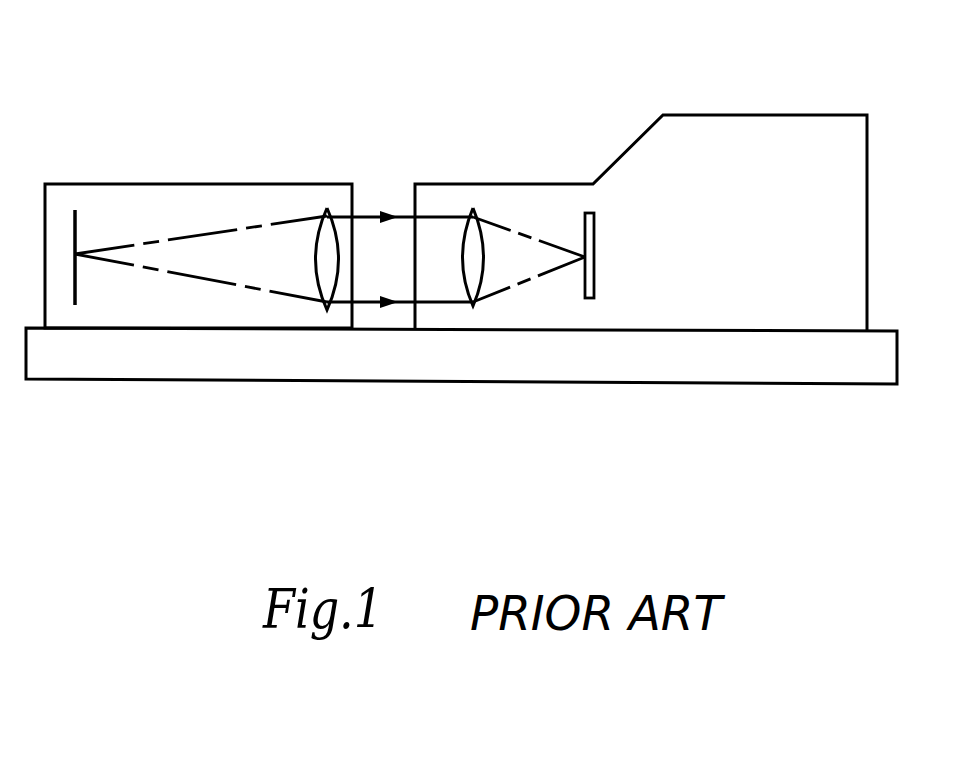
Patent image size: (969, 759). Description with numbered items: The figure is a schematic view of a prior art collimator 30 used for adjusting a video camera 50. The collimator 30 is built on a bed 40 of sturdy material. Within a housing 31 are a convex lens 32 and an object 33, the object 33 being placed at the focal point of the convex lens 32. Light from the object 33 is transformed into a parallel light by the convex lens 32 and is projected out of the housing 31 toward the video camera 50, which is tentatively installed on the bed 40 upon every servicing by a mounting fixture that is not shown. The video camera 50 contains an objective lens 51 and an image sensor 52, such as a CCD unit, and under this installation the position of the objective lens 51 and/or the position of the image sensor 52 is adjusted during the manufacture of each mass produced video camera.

The collimator 30 is at (202, 184).
The housing 31 is at (235, 184).
The convex lens 32 is at (327, 208).
The object 33 is at (77, 227).
The bed 40 is at (447, 367).
The video camera 50 is at (748, 90).
The objective lens 51 is at (473, 208).
The image sensor 52 is at (590, 213).